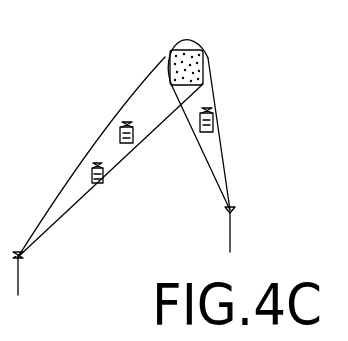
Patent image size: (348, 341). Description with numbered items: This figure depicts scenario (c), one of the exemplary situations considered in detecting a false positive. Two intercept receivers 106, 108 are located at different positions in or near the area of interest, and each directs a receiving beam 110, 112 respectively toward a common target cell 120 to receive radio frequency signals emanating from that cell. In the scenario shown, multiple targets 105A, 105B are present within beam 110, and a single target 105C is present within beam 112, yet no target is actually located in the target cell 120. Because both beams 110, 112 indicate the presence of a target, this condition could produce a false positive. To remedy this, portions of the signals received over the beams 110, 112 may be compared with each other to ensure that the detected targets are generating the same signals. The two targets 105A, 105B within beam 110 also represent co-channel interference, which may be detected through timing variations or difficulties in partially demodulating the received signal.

The target 105A is at (103, 183).
The target 105B is at (133, 143).
The target 105C is at (213, 117).
The intercept receiver 106 is at (20, 277).
The intercept receiver 108 is at (232, 232).
The receiving beam 110 is at (138, 108).
The receiving beam 112 is at (213, 157).
The target cell 120 is at (203, 60).